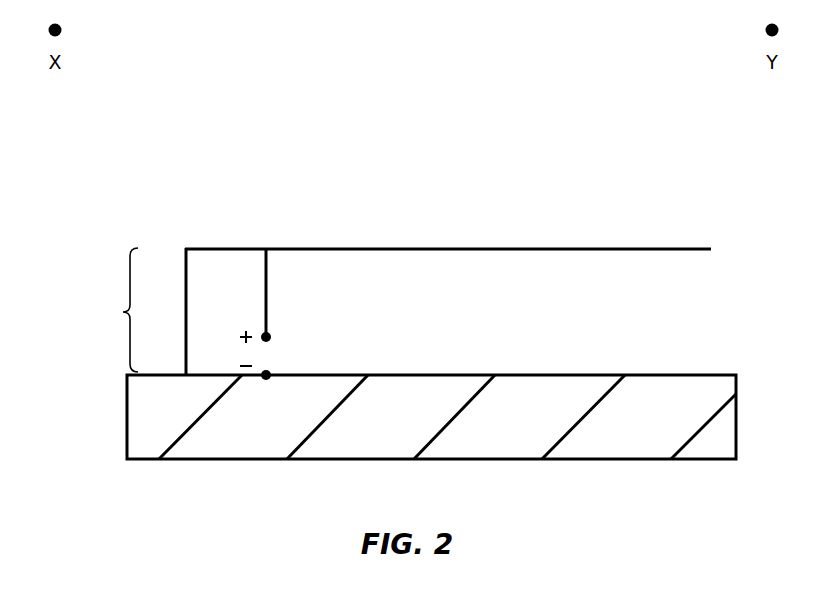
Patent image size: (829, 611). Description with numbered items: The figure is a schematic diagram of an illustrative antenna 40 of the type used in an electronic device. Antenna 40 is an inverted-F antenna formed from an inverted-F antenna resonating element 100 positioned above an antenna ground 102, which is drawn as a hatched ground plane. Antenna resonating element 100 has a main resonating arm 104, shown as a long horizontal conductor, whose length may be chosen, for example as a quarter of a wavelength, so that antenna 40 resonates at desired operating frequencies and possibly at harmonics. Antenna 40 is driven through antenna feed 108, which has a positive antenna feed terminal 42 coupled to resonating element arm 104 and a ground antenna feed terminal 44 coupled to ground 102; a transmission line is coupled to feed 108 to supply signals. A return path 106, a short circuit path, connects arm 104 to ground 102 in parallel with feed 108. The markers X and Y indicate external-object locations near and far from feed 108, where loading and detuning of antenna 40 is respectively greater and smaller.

The antenna 40 is at (76, 223).
The positive antenna feed terminal 42 is at (272, 337).
The ground antenna feed terminal 44 is at (268, 372).
The inverted-F antenna resonating element 100 is at (112, 310).
The antenna ground 102 is at (137, 415).
The resonating element arm 104 is at (430, 247).
The return path 106 is at (187, 294).
The antenna feed 108 is at (304, 309).